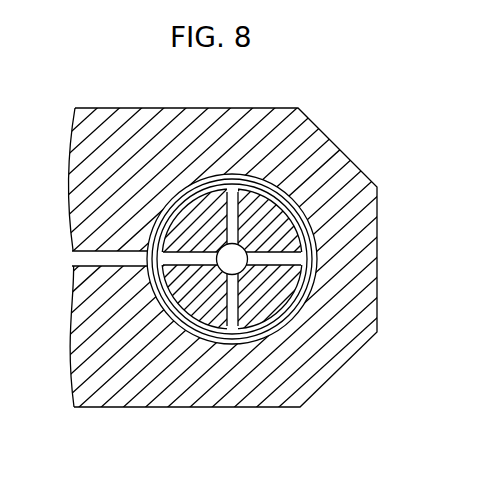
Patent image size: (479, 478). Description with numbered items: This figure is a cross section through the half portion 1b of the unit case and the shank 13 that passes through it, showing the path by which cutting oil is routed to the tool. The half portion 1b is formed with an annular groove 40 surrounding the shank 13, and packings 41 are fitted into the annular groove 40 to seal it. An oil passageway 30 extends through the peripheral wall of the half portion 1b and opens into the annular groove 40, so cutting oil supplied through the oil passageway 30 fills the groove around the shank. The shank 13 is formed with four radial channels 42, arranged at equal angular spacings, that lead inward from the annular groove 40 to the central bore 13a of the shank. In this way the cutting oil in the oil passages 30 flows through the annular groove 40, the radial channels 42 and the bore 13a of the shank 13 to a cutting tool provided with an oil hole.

The half portion of unit case 1b is at (310, 135).
The oil passageways 30 is at (92, 257).
The annular groove 40 is at (252, 180).
The packings 41 is at (215, 172).
The radial channels 42 is at (195, 250).
The shank 13 is at (207, 318).
The bore 13a is at (242, 267).